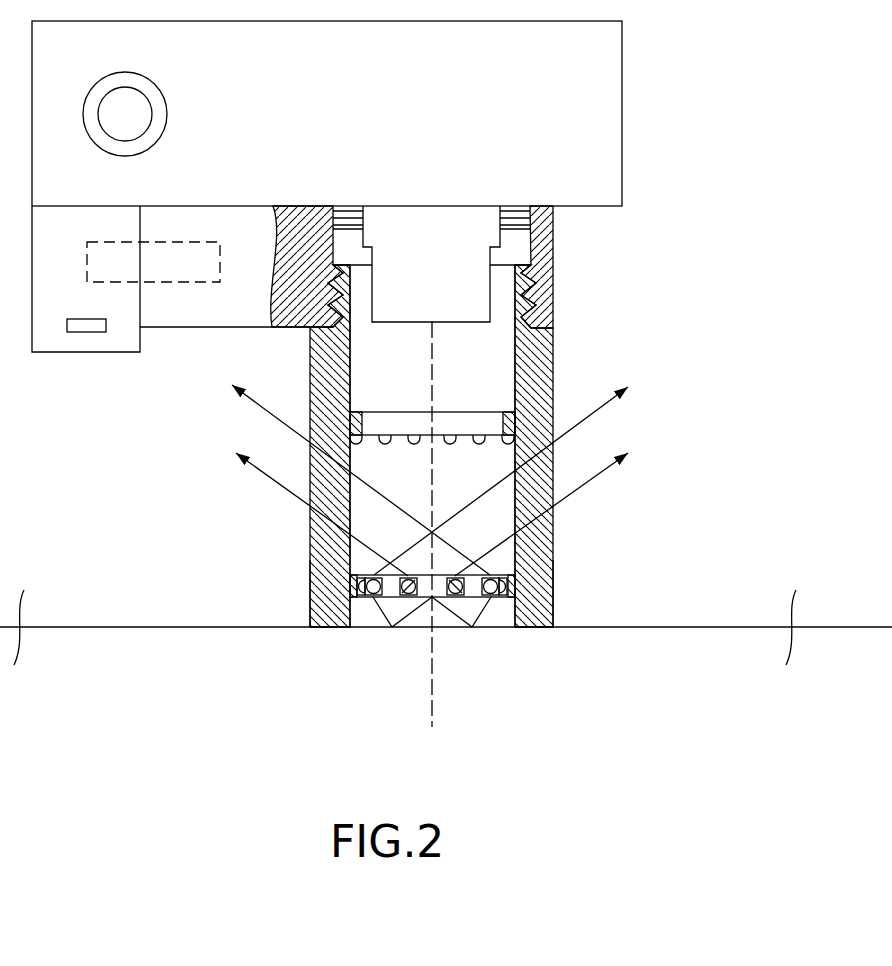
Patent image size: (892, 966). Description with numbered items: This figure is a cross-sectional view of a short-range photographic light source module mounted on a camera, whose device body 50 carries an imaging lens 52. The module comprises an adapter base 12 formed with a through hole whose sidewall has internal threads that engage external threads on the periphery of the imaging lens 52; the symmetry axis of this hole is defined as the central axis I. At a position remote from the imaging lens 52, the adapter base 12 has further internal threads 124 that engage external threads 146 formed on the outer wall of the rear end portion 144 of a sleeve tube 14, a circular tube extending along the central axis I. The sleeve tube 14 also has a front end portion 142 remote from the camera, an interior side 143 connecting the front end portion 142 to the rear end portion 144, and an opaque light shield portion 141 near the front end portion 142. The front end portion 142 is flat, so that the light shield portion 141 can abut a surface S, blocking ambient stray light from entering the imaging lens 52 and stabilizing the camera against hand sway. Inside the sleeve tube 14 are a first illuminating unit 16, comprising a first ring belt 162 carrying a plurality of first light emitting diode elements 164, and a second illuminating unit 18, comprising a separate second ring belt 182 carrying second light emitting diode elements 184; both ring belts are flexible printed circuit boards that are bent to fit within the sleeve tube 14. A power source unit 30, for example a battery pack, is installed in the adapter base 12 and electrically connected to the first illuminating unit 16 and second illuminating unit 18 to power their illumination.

The device body 50 is at (588, 122).
The power source unit 30 is at (175, 268).
The adapter base 12 is at (438, 261).
The internal threads 124 is at (538, 294).
The imaging lens 52 is at (468, 273).
The sleeve tube 14 is at (486, 469).
The rear end portion 144 is at (548, 338).
The external threads 146 is at (520, 330).
The interior side 143 is at (520, 452).
The front end portion 142 is at (537, 592).
The light shield portion 141 is at (553, 623).
The second illuminating unit 18 is at (377, 438).
The second ring belt 182 is at (358, 411).
The second light emitting diode elements 184 is at (383, 444).
The first illuminating unit 16 is at (452, 645).
The first ring belt 162 is at (378, 597).
The first light emitting diode elements 164 is at (450, 598).
The central axis I is at (431, 542).
The surface S is at (700, 628).